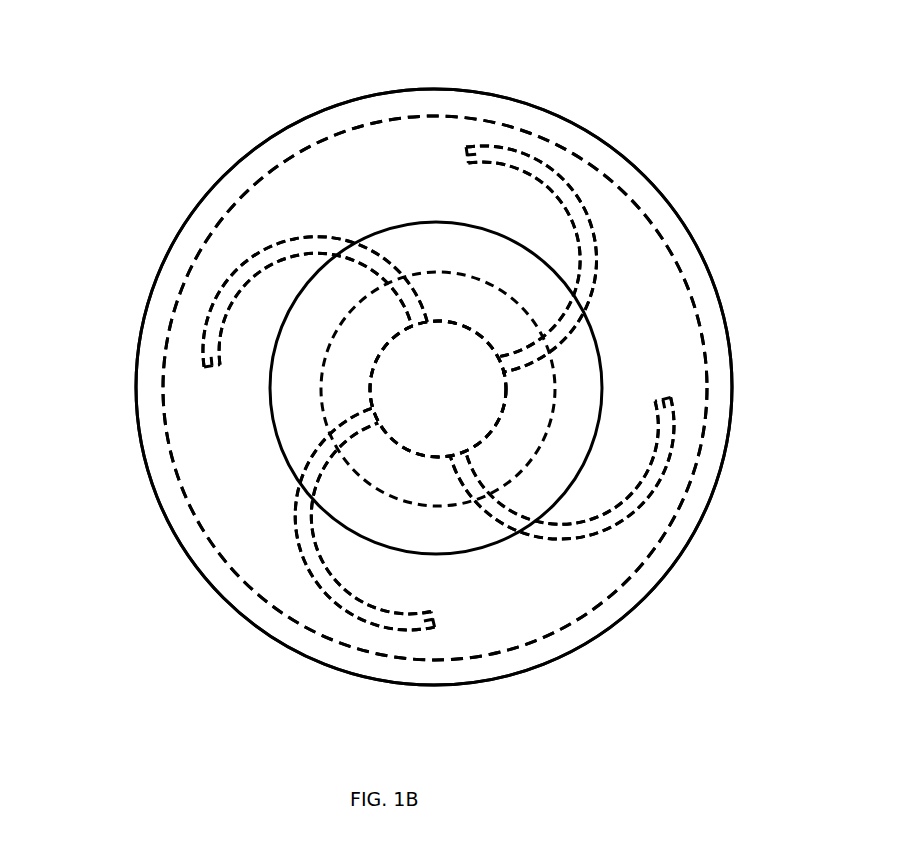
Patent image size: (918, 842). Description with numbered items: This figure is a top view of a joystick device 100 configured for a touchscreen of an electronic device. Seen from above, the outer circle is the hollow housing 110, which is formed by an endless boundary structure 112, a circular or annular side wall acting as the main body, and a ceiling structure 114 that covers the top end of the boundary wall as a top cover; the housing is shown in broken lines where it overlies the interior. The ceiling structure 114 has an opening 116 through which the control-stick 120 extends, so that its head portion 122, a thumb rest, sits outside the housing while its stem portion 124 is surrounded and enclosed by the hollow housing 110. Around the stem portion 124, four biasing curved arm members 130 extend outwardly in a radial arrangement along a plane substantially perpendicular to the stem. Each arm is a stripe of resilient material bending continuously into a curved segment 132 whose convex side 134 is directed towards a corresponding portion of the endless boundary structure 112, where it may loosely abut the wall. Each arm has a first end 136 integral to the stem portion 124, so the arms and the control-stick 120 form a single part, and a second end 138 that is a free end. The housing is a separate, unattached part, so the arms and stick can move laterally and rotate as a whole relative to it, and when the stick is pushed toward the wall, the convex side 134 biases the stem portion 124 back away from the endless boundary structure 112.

The joystick device 100 is at (587, 88).
The hollow housing 110 is at (667, 190).
The endless boundary structure 112 is at (680, 237).
The ceiling structure 114 is at (607, 202).
The opening 116 is at (477, 302).
The control-stick 120 is at (397, 222).
The head portion 122 is at (420, 250).
The stem portion 124 is at (453, 357).
The biasing curved arm members 130 is at (280, 230).
The curved segment 132 is at (217, 327).
The convex side 134 is at (205, 335).
The first end 136 is at (413, 320).
The second end 138 is at (213, 363).